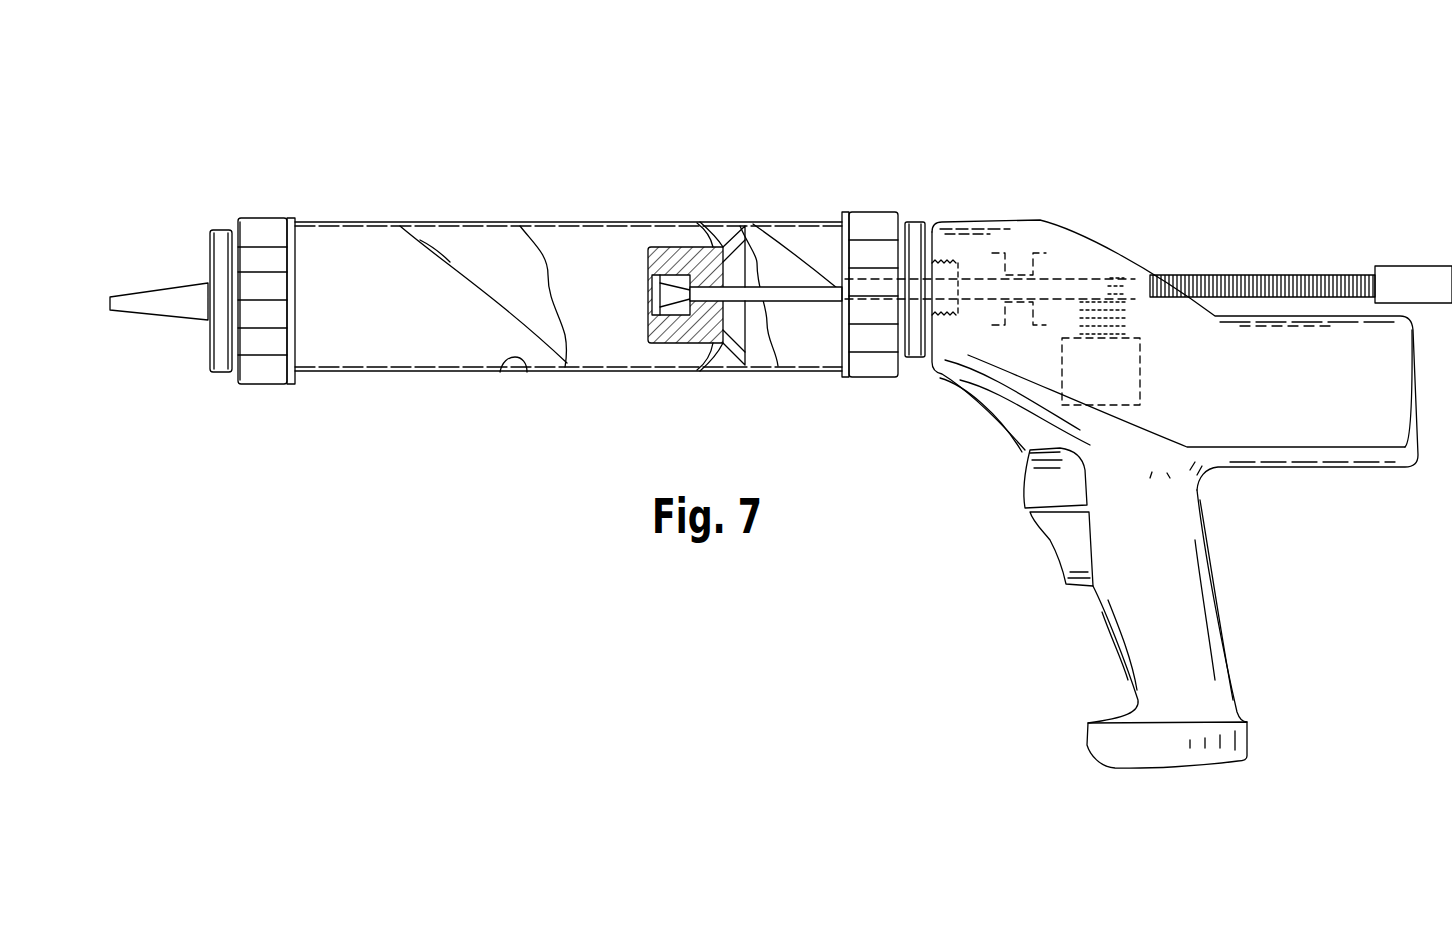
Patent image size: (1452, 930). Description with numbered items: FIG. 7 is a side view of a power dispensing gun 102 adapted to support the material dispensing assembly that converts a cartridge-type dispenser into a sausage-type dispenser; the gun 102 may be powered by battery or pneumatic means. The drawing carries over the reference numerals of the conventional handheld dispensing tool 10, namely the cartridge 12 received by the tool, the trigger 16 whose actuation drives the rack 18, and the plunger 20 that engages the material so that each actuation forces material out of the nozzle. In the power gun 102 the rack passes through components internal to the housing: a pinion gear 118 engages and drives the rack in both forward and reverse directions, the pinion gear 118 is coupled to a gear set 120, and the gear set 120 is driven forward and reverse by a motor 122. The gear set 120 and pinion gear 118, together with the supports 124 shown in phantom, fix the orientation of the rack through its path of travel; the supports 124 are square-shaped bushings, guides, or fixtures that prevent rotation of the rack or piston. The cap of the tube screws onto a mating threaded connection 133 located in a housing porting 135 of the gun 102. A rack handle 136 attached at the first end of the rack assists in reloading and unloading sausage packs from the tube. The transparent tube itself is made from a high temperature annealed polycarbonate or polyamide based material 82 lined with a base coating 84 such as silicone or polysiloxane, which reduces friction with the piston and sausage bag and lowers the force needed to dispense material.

The dispensing tool 10 is at (1220, 175).
The cartridge 12 is at (1118, 258).
The trigger 16 is at (868, 205).
The rack 18 is at (1237, 678).
The plunger 20 is at (1048, 536).
The polycarbonate or polyamide based material 82 is at (455, 340).
The base coating 84 is at (527, 372).
The power dispensing tool 102 is at (803, 95).
The pinion gear 118 is at (1120, 290).
The gear set 120 is at (1168, 362).
The motor 122 is at (1118, 385).
The supports 124 is at (1018, 253).
The mating threaded connection 133 is at (945, 320).
The housing porting 135 is at (980, 386).
The rack handle 136 is at (1418, 280).